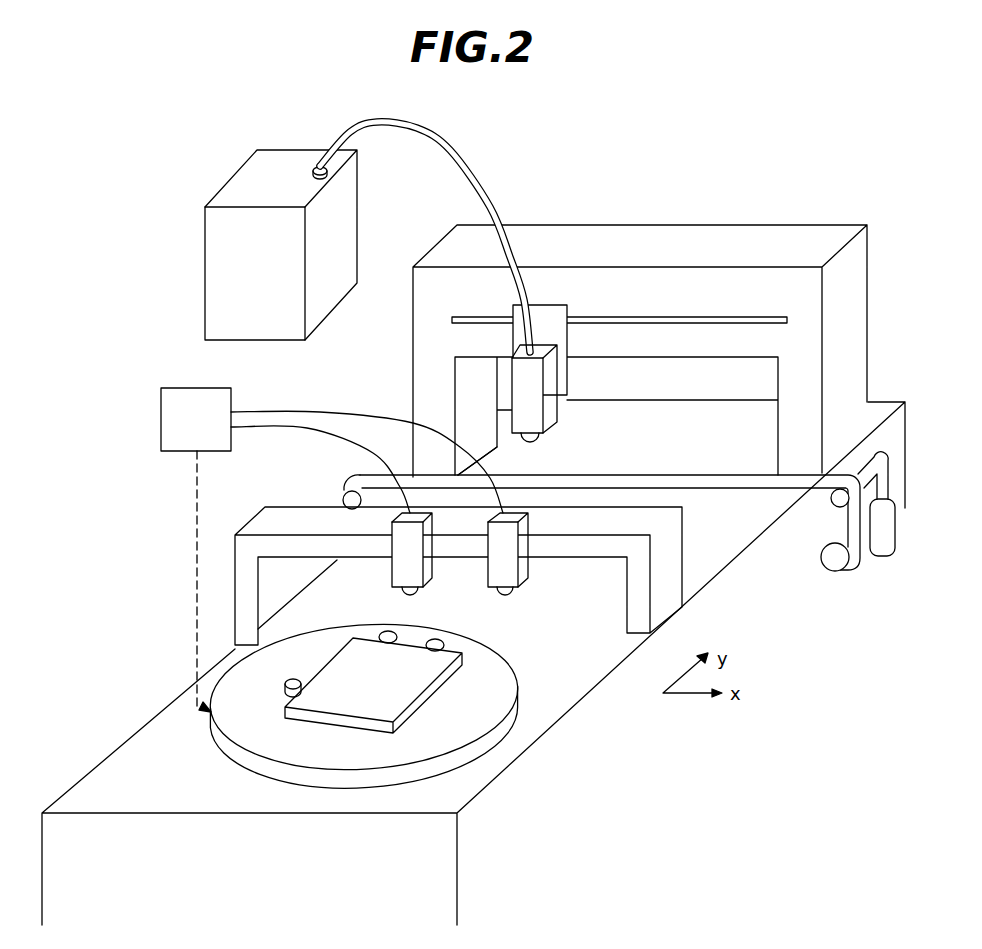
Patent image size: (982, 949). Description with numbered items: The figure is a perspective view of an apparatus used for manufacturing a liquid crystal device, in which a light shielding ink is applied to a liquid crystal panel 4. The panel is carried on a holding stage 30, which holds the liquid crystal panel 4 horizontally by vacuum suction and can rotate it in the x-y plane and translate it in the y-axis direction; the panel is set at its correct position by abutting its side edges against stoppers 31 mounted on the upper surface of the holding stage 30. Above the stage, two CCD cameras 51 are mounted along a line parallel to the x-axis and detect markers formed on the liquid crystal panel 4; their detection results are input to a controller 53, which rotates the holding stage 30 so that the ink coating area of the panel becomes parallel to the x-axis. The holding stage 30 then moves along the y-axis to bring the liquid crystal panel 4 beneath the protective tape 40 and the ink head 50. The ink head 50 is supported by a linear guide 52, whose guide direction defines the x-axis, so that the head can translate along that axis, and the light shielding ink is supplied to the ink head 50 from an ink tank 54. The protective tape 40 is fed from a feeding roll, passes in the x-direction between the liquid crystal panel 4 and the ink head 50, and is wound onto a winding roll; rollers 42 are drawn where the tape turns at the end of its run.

The liquid crystal panel 4 is at (427, 700).
The holding stage 30 is at (518, 663).
The stoppers 31 is at (398, 633).
The protective tape 40 is at (662, 473).
The rollers 42 is at (825, 577).
The ink head 50 is at (541, 442).
The CCD cameras 51 is at (392, 568).
The linear guide 52 is at (645, 317).
The controller 53 is at (172, 387).
The ink tank 54 is at (205, 235).